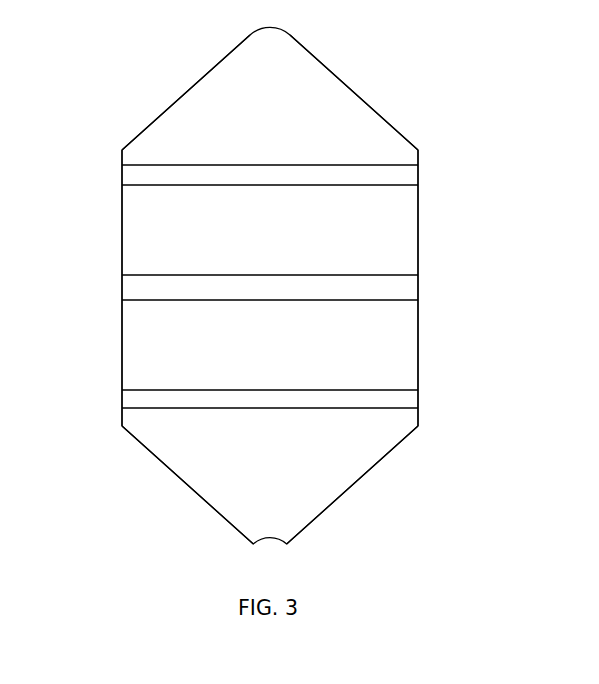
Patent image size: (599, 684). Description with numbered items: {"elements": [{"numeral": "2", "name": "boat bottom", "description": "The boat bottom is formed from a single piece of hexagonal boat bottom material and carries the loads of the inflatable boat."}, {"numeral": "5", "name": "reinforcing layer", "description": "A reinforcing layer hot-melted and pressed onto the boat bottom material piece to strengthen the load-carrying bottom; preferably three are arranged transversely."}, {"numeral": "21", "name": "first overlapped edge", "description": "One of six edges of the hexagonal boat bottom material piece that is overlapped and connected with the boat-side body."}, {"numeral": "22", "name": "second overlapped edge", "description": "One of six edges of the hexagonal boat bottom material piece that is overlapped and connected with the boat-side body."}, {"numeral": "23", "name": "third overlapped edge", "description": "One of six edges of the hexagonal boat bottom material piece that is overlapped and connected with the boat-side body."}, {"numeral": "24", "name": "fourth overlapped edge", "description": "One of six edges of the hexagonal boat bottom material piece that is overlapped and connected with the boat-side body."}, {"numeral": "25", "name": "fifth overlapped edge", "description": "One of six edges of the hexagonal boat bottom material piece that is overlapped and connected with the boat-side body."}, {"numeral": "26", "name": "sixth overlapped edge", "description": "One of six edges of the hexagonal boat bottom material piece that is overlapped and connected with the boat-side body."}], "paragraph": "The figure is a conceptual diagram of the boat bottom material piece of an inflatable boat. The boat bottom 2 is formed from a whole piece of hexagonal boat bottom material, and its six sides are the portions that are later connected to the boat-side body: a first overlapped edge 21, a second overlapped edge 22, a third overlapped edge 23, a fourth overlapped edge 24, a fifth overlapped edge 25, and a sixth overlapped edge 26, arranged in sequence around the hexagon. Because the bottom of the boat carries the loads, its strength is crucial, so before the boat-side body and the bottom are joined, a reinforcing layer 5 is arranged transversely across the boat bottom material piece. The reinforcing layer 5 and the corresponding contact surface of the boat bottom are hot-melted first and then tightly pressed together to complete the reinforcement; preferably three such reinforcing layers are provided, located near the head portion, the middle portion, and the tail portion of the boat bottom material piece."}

The container body 2 is at (430, 228).
The reinforcing band 5 is at (400, 173).
The right side wall 21 is at (420, 330).
The lower right inclined wall 22 is at (358, 480).
The lower left inclined wall 23 is at (200, 498).
The left side wall 24 is at (120, 250).
The upper left inclined wall 25 is at (180, 97).
The upper right inclined wall 26 is at (362, 97).